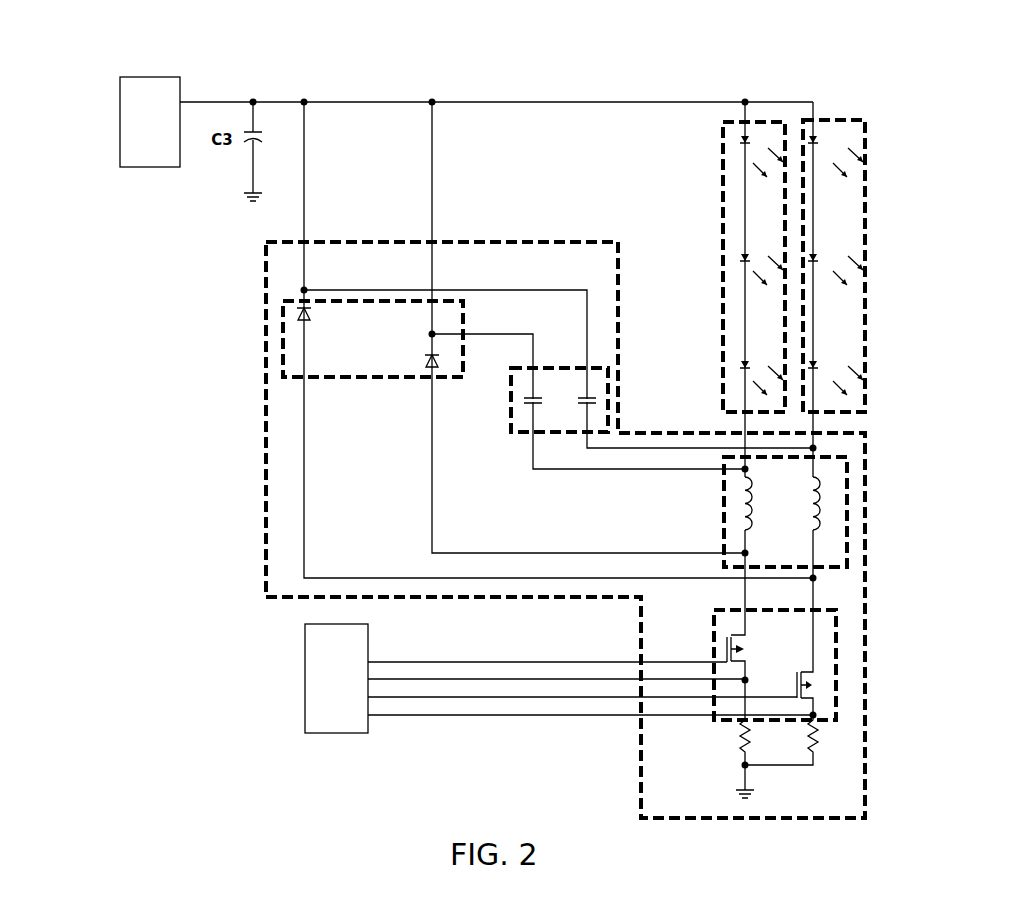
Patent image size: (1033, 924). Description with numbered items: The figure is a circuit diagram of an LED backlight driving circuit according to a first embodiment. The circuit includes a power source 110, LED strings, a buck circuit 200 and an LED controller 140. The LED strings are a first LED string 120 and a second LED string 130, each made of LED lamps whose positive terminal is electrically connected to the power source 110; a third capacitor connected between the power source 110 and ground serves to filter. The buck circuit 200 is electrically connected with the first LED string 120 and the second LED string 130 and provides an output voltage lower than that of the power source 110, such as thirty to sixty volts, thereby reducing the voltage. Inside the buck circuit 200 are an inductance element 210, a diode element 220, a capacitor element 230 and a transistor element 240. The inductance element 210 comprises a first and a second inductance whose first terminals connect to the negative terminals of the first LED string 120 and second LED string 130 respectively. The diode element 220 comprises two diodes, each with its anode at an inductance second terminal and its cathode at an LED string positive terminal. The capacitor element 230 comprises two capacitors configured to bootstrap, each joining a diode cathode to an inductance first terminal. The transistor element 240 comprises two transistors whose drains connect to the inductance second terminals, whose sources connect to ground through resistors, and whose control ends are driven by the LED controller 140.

The power source 110 is at (143, 138).
The first LED string 120 is at (725, 178).
The second LED string 130 is at (865, 193).
The LED controller 140 is at (322, 696).
The buck circuit 200 is at (568, 460).
The inductance element 210 is at (858, 480).
The diode element 220 is at (290, 355).
The capacitor element 230 is at (517, 433).
The transistor element 240 is at (865, 648).